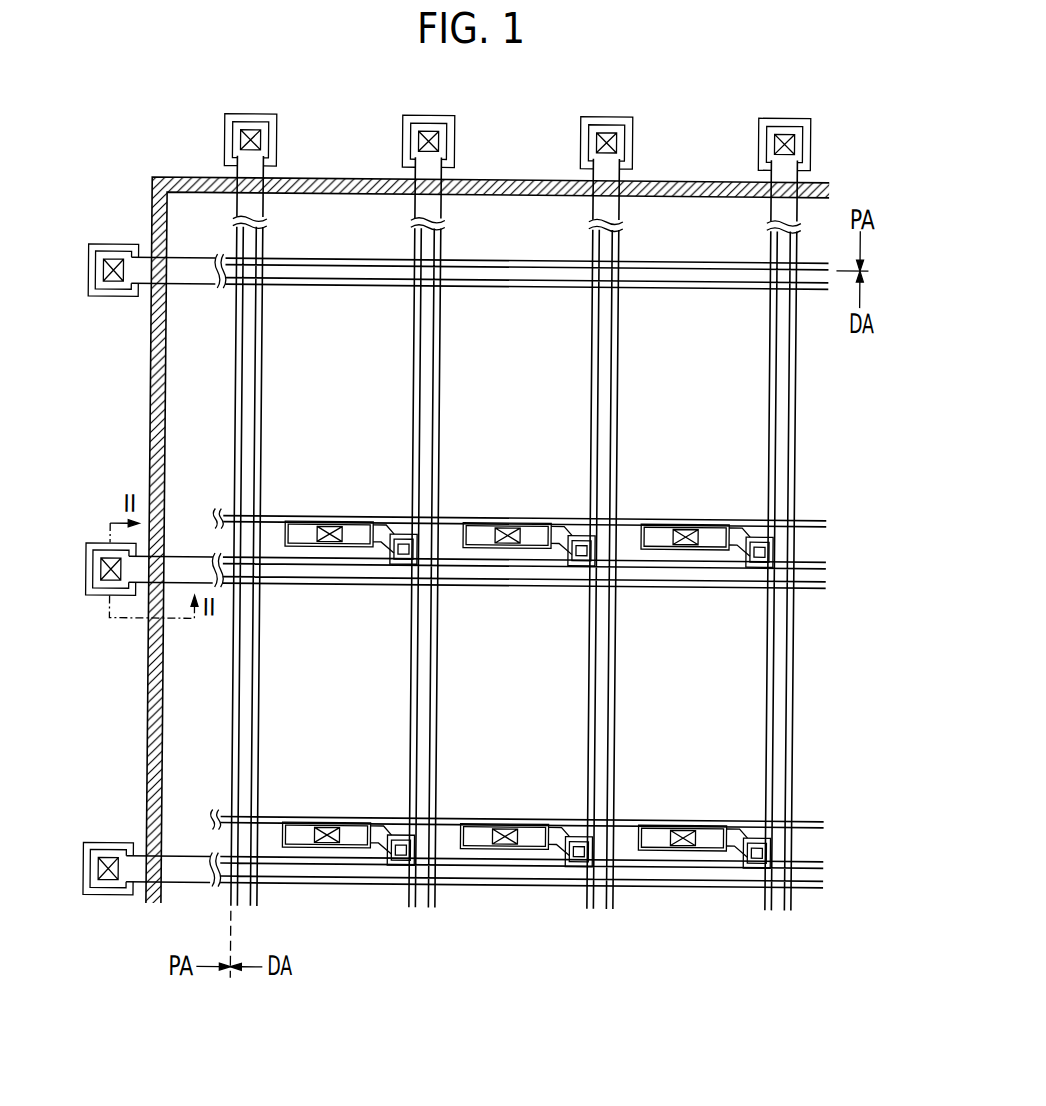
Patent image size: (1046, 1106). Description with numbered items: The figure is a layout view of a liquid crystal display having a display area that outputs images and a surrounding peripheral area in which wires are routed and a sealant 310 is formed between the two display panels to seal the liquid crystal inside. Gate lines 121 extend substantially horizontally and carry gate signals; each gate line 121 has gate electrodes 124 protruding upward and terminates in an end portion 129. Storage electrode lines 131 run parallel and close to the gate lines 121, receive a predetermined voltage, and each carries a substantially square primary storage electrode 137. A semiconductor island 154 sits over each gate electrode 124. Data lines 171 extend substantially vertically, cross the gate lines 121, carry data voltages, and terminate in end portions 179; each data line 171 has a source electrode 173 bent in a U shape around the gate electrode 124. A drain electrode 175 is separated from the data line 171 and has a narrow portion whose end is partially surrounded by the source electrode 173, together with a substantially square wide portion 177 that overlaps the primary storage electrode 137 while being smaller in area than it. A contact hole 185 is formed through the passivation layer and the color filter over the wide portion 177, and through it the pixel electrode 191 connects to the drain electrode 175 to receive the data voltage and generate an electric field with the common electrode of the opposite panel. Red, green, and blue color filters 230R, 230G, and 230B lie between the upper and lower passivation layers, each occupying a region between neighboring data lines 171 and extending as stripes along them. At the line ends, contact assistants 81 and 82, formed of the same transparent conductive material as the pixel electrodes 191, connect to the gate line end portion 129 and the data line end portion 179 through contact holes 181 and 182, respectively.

The gate line 121 is at (333, 888).
The gate electrode 124 is at (392, 836).
The end portion of gate line 129 is at (126, 893).
The storage electrode line 131 is at (397, 519).
The primary storage electrode 137 is at (303, 552).
The semiconductor island 154 is at (392, 535).
The data line 171 is at (260, 396).
The source electrode 173 is at (403, 571).
The drain electrode 175 is at (395, 568).
The wide portion of drain electrode 177 is at (301, 523).
The end portion of data line 179 is at (451, 128).
The contact hole 181 is at (108, 886).
The contact hole 182 is at (414, 144).
The contact hole 185 is at (513, 822).
The pixel electrode 191 is at (419, 692).
The contact assistant 81 is at (118, 850).
The contact assistant 82 is at (451, 152).
The sealant 310 is at (147, 437).
The red color filter 230R is at (520, 559).
The green color filter 230G is at (431, 559).
The blue color filter 230B is at (609, 561).